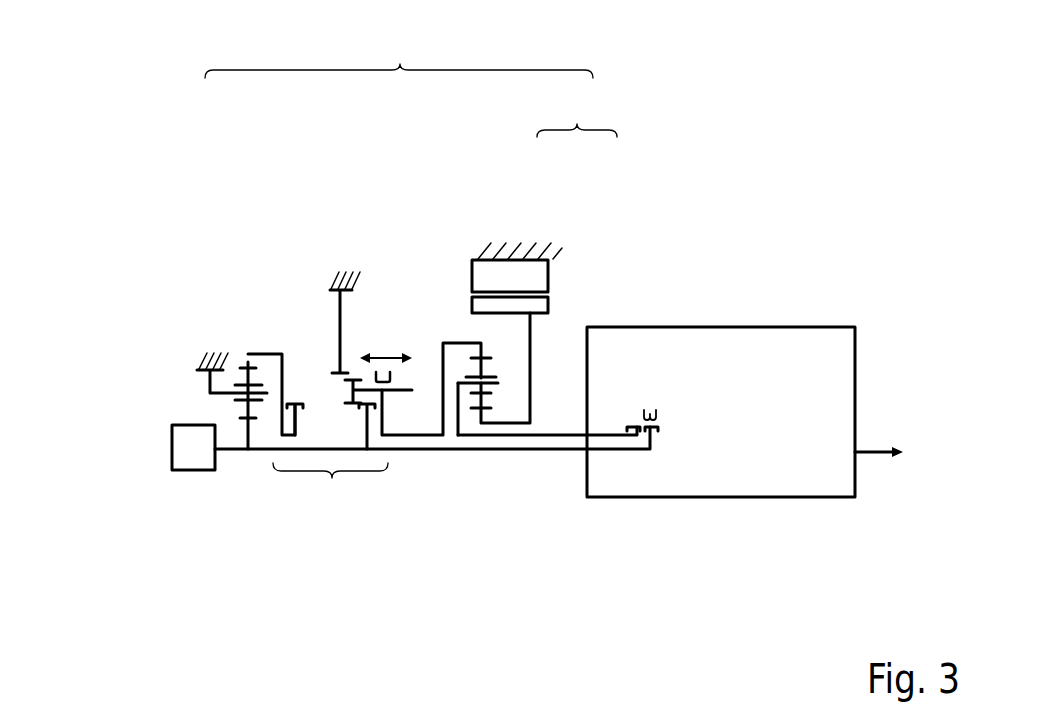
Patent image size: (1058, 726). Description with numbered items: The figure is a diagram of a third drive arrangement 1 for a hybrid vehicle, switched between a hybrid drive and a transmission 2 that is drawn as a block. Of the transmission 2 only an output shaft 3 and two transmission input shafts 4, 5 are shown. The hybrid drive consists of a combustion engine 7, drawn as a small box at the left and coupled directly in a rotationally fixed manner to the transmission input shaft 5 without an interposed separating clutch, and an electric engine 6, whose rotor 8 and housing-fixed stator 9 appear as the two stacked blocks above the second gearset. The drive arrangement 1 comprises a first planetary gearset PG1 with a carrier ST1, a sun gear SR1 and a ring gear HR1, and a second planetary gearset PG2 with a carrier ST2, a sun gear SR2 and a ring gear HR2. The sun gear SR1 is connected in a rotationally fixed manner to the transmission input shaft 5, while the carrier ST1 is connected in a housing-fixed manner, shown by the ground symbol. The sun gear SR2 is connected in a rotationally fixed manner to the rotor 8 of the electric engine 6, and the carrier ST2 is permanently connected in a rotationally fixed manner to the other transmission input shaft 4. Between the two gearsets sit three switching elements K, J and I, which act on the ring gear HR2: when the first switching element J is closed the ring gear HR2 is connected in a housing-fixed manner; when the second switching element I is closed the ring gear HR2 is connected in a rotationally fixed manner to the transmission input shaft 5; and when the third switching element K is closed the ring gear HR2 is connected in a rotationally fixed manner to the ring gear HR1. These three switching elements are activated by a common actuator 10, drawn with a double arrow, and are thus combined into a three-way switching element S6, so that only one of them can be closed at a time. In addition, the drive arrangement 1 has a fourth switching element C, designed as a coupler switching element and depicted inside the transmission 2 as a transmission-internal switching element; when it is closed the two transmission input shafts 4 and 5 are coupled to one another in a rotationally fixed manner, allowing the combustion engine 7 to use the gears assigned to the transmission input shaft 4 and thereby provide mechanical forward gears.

The drive arrangement 1 is at (399, 52).
The transmission 2 is at (758, 327).
The output shaft 3 is at (874, 448).
The transmission input shaft 4 is at (552, 432).
The transmission input shaft 5 is at (538, 447).
The electric engine 6 is at (577, 109).
The combustion engine 7 is at (198, 460).
The rotor 8 is at (540, 308).
The stator 9 is at (538, 280).
The common actuator 10 is at (404, 374).
The ring gear HR1 is at (247, 357).
The ring gear HR2 is at (475, 347).
The sun gear SR1 is at (232, 447).
The sun gear SR2 is at (478, 415).
The carrier ST1 is at (217, 402).
The carrier ST2 is at (488, 387).
The first planetary gearset PG1 is at (248, 306).
The second planetary gearset PG2 is at (478, 490).
The third switching element K is at (301, 421).
The first switching element J is at (371, 355).
The second switching element I is at (365, 426).
The fourth switching element C is at (642, 408).
The three-way switching element S6 is at (330, 491).